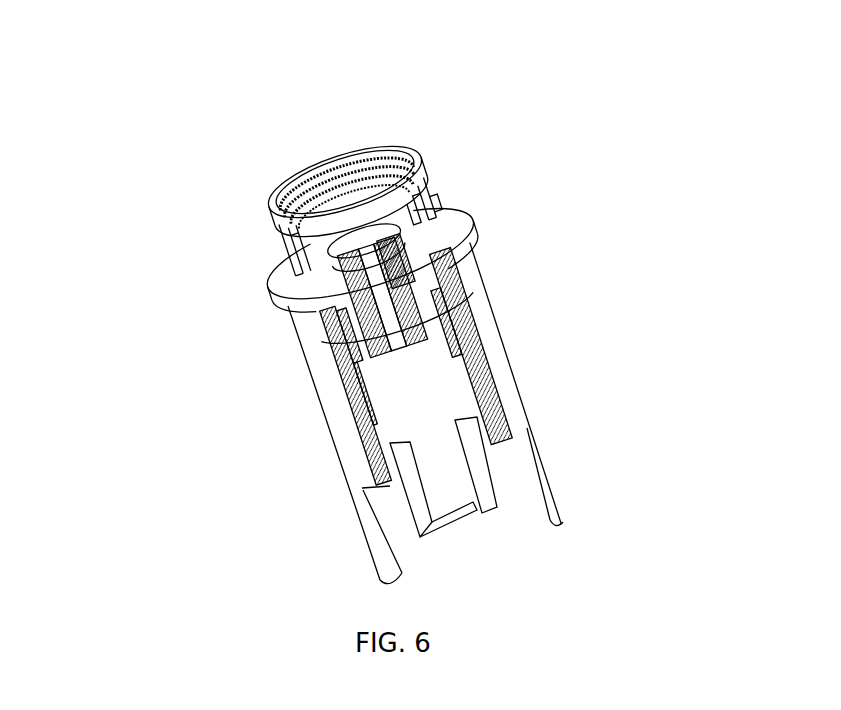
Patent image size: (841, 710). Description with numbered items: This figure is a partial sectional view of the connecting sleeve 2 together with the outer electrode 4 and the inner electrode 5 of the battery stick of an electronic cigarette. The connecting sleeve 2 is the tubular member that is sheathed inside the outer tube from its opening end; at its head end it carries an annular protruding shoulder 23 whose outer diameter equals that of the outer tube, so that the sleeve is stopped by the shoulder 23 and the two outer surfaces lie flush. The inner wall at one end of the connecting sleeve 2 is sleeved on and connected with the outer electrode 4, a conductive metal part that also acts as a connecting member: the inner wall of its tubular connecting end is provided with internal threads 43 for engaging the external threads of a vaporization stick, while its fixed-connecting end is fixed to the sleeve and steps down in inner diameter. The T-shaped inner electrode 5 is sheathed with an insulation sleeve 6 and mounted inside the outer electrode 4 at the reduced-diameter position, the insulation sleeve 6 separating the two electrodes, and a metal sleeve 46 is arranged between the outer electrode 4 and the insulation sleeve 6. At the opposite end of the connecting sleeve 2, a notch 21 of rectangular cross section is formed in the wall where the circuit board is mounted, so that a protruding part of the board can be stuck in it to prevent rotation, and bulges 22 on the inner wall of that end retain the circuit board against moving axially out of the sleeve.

The connecting sleeve 2 is at (471, 393).
The notch 21 is at (601, 442).
The bulges 22 is at (302, 506).
The annular protruding shoulder 23 is at (463, 306).
The outer electrode 4 is at (297, 202).
The internal threads 43 is at (291, 157).
The metal sleeve 46 is at (298, 259).
The inner electrode 5 is at (384, 207).
The insulation sleeve 6 is at (437, 185).